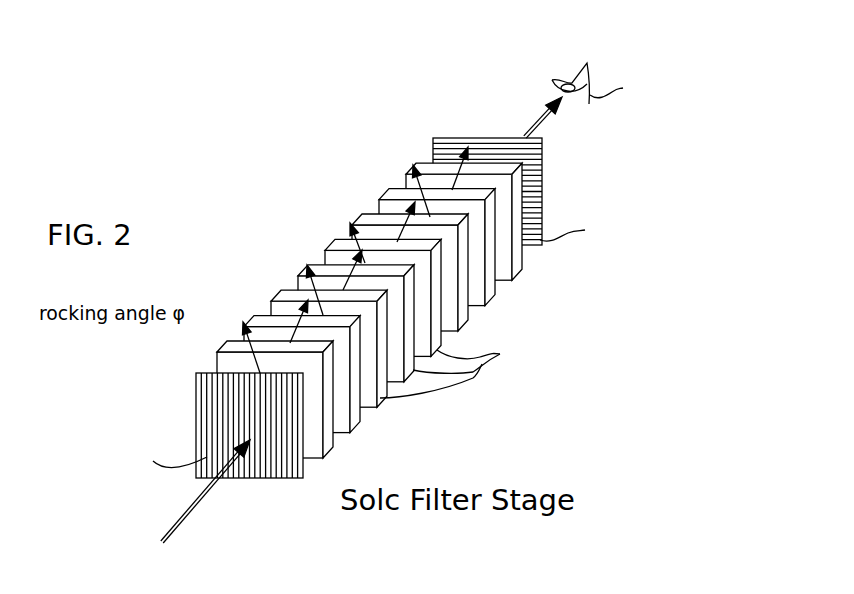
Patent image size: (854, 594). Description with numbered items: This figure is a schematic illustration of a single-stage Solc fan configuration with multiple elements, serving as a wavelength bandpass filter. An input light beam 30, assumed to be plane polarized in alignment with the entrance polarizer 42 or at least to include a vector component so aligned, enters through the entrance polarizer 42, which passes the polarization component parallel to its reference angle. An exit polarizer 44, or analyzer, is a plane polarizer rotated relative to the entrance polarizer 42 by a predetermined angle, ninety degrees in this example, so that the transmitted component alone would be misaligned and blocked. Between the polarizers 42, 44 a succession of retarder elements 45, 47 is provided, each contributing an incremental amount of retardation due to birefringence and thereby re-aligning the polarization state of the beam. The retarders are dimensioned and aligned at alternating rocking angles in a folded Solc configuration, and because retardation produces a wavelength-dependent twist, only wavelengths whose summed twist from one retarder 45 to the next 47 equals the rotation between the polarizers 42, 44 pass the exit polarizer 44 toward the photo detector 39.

The light beam 30 is at (203, 502).
The photo detector 39 is at (572, 82).
The entrance polarizer 42 is at (207, 423).
The exit polarizer 44 is at (443, 155).
The retarder element 45 is at (278, 292).
The retarder element 47 is at (310, 268).